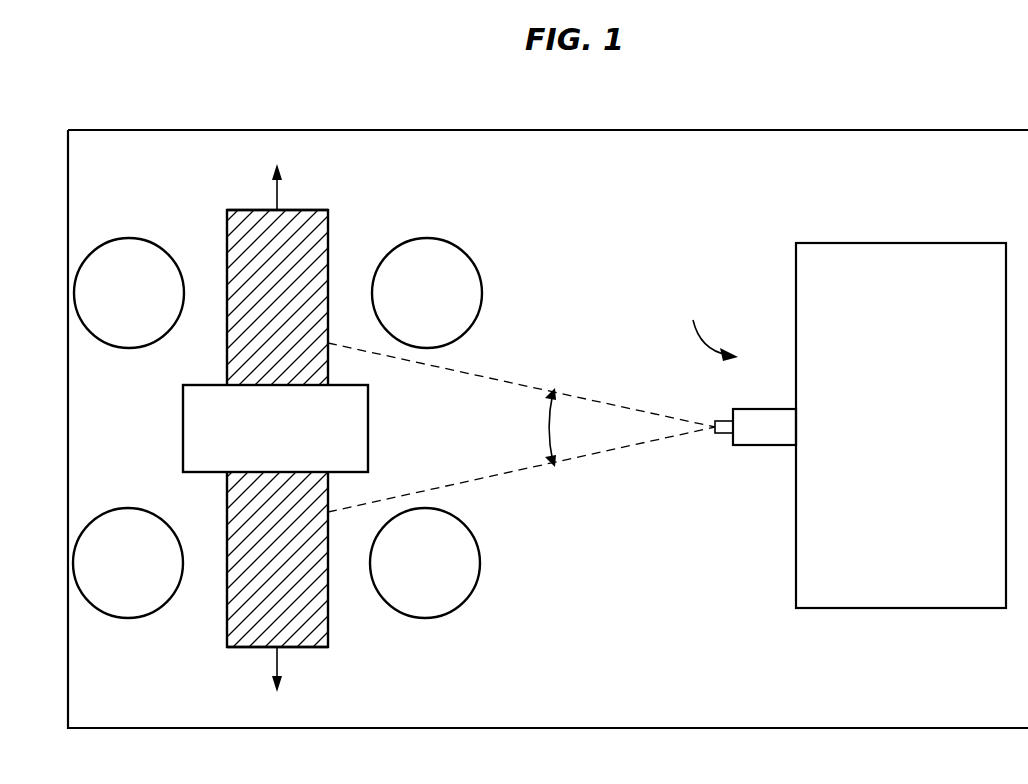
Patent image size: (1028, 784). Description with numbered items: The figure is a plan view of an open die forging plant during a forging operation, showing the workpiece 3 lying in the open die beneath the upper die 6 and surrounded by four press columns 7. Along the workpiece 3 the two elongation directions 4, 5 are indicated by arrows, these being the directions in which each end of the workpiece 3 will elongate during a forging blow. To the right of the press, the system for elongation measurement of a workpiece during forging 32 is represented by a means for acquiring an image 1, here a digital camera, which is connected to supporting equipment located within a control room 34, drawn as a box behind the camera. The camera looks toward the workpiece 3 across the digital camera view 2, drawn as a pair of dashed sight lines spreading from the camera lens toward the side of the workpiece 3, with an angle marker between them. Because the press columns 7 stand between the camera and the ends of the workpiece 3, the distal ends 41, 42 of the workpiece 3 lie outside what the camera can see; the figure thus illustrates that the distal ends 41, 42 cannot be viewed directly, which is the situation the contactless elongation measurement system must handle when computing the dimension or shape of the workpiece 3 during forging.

The means for acquiring an image 1 is at (758, 445).
The digital camera view 2 is at (550, 430).
The workpiece 3 is at (228, 620).
The elongation direction 4 is at (275, 662).
The elongation direction 5 is at (275, 196).
The upper die 6 is at (183, 422).
The press columns 7 is at (128, 238).
The system for elongation measurement of a workpiece during forging 32 is at (710, 326).
The control room 34 is at (889, 243).
The distal end 41 is at (328, 210).
The distal end 42 is at (328, 647).